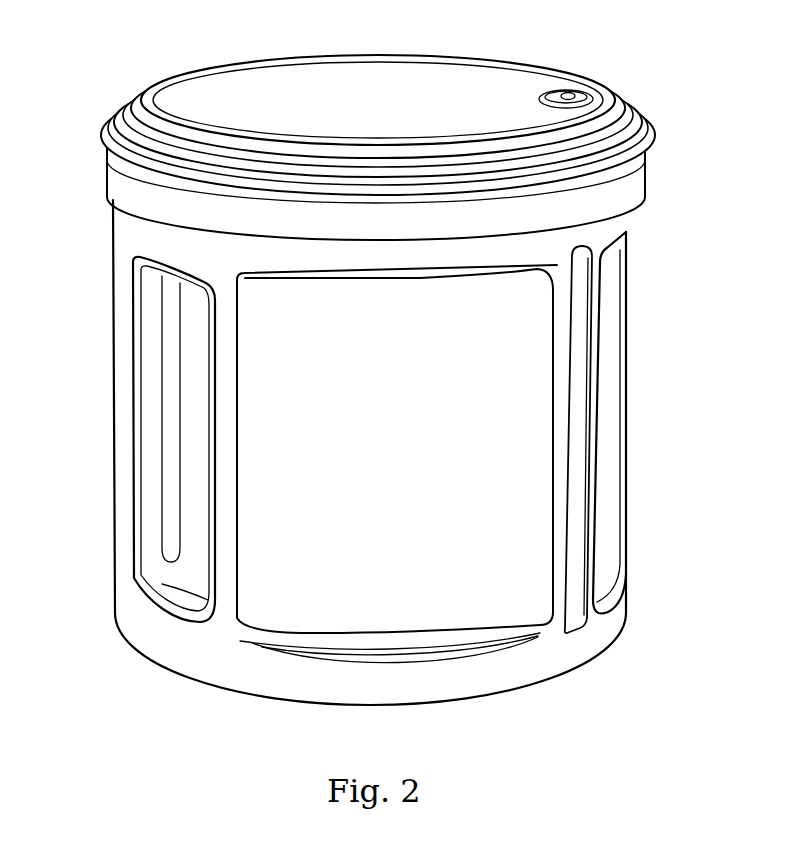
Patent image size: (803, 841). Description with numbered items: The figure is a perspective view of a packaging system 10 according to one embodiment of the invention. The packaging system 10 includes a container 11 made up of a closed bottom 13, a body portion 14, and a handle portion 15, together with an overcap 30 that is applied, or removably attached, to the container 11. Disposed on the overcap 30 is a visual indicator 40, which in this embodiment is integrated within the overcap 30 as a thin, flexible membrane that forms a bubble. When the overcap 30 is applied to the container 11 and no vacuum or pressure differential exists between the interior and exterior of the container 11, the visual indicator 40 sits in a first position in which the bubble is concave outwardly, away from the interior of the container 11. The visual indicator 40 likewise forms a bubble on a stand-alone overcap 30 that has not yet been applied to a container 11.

The packaging system 10 is at (370, 383).
The container 11 is at (380, 444).
The closed bottom 13 is at (245, 693).
The body portion 14 is at (625, 470).
The handle portion 15 is at (167, 548).
The overcap 30 is at (414, 106).
The visual indicator 40 is at (640, 97).